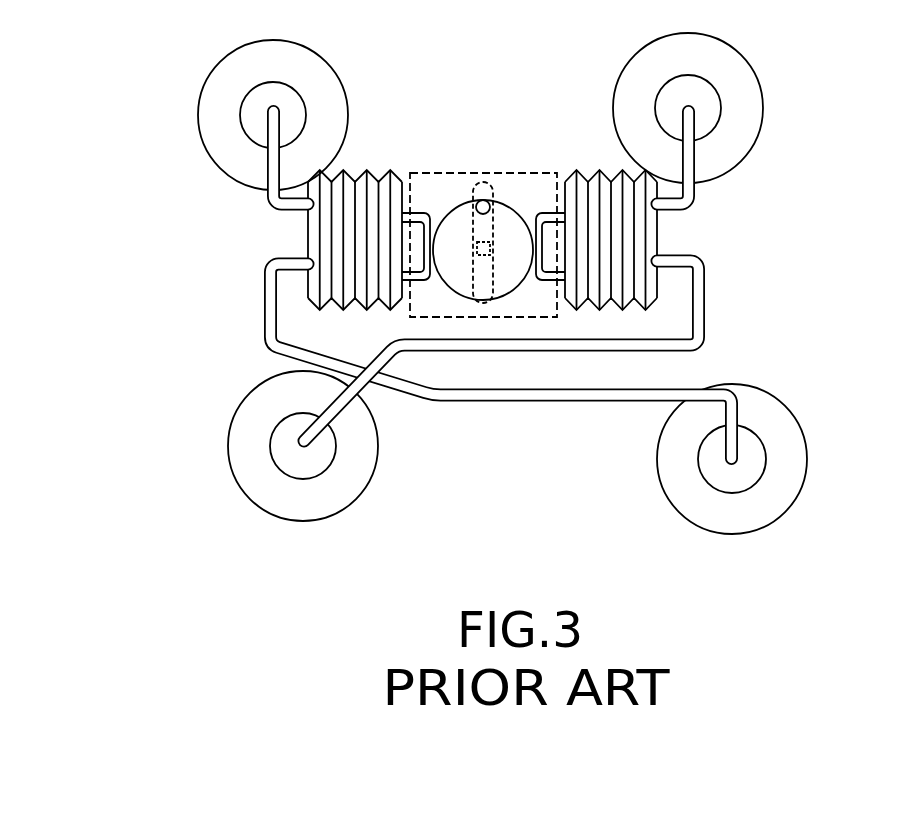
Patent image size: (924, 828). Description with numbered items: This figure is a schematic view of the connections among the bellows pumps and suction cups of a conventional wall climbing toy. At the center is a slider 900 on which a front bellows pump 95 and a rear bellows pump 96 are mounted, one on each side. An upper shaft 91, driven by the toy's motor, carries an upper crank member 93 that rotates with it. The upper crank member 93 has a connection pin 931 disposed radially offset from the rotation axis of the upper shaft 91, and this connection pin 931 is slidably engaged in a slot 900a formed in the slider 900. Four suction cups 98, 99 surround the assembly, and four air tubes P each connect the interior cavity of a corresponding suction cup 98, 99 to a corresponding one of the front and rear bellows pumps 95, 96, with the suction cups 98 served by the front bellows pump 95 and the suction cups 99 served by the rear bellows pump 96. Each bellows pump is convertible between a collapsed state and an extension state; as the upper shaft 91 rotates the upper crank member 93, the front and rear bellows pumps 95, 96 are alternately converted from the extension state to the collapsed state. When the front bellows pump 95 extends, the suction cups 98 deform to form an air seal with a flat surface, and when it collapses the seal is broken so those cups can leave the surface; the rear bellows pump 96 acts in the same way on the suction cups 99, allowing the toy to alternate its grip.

The suction cups 98 is at (310, 78).
The suction cups 99 is at (735, 87).
The air tubes P is at (273, 165).
The front bellows pump 95 is at (318, 232).
The rear bellows pump 96 is at (650, 232).
The upper crank member 93 is at (453, 225).
The connection pin 931 is at (483, 198).
The slider 900 is at (535, 173).
The slot 900a is at (483, 303).
The upper shaft 91 is at (490, 255).